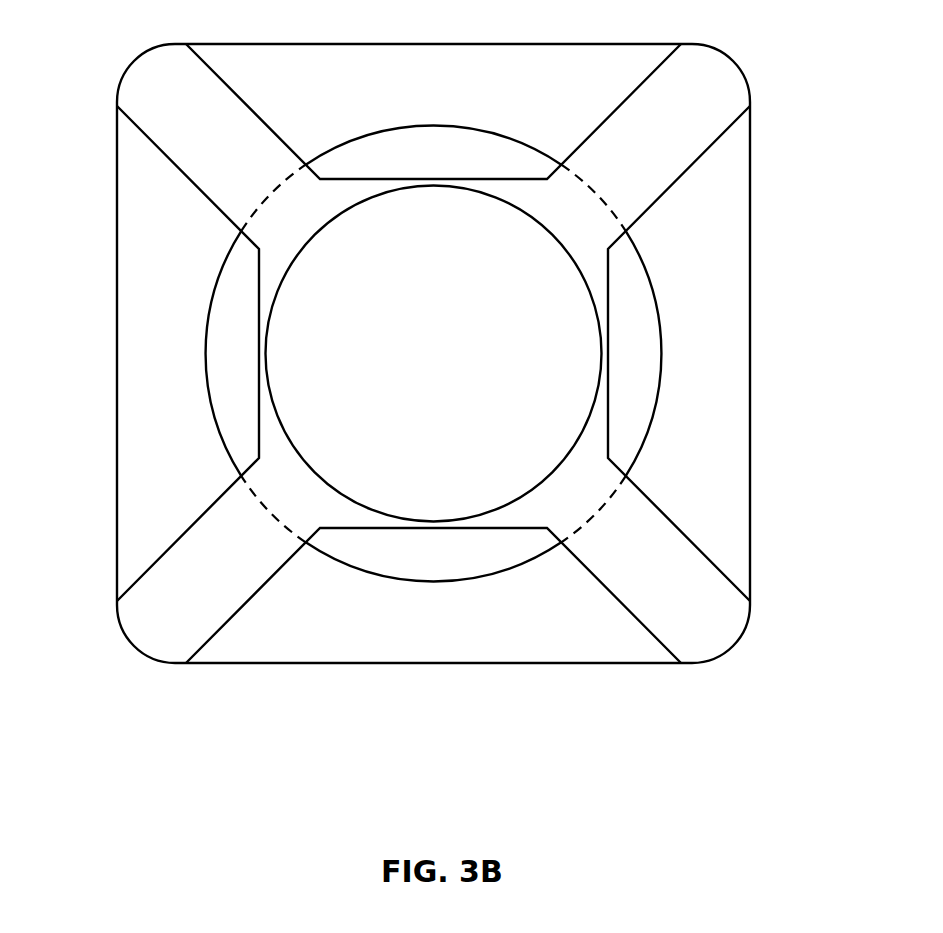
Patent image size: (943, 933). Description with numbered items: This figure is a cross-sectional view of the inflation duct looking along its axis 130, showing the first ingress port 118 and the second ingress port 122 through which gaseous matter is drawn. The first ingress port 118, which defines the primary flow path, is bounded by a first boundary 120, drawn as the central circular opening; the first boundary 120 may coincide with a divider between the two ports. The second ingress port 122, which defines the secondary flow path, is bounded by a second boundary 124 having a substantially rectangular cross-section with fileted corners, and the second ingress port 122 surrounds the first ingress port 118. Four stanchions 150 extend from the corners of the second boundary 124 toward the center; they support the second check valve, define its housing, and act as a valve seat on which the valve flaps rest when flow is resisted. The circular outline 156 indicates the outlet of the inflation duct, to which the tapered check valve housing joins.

The first ingress port 118 is at (459, 313).
The first boundary 120 is at (595, 315).
The second ingress port 122 is at (258, 58).
The second boundary 124 is at (439, 364).
The axis 130 is at (433, 353).
The stanchions 150 is at (175, 87).
The outlet 156 is at (510, 137).